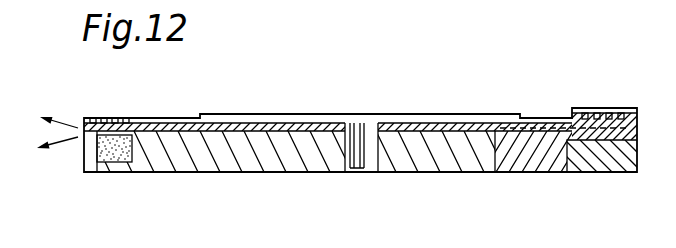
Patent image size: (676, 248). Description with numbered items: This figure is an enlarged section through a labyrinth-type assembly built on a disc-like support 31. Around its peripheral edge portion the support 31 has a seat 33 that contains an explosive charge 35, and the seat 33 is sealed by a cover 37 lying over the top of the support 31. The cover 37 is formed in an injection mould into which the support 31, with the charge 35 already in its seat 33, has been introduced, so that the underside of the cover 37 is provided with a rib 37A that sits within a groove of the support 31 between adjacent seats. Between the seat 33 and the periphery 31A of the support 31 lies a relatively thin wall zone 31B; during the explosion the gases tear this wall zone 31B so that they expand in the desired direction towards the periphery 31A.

The disc-like support 31 is at (425, 163).
The periphery 31A is at (640, 143).
The wall zone 31B is at (88, 149).
The seat 33 is at (120, 162).
The explosive charge 35 is at (106, 157).
The cover 37 is at (412, 123).
The rib 37A is at (524, 153).